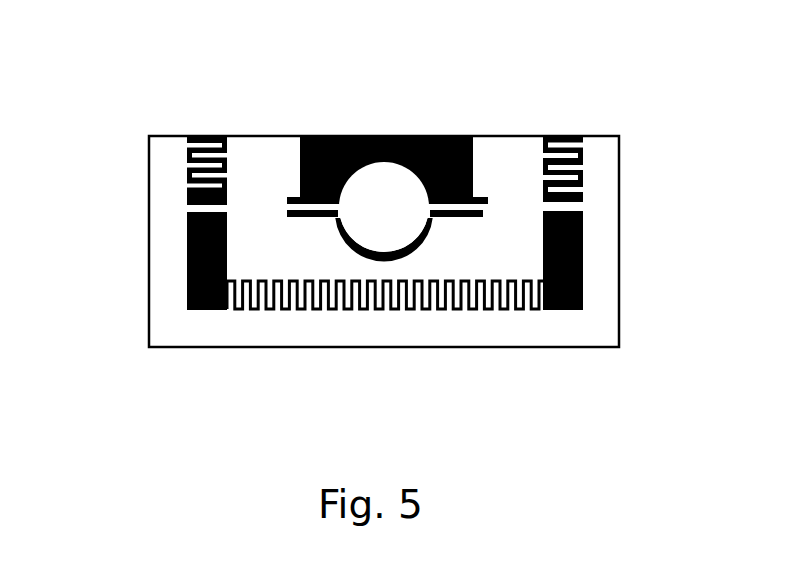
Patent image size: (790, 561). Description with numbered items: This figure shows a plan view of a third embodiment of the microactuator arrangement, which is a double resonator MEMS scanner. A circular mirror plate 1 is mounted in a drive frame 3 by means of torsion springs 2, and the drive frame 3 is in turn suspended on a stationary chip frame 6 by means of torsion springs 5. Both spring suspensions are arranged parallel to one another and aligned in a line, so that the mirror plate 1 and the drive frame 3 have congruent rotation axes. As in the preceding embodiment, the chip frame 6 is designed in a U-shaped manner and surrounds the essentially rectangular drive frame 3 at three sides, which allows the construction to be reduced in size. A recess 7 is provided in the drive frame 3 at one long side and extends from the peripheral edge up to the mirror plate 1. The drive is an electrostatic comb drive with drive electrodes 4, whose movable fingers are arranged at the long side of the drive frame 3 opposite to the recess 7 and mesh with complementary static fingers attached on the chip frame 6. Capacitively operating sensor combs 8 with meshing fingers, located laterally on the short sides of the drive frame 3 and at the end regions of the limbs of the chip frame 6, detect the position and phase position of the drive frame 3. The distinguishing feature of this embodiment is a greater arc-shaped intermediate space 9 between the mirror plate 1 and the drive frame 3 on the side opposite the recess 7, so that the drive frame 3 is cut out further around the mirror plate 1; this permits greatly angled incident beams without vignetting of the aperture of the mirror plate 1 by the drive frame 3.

The mirror plate 1 is at (362, 221).
The torsion springs 2 is at (488, 200).
The drive frame 3 is at (445, 266).
The drive electrodes 4 is at (292, 290).
The torsion springs 5 is at (583, 202).
The chip frame 6 is at (163, 178).
The recess 7 is at (447, 137).
The sensor combs 8 is at (582, 147).
The intermediate space 9 is at (377, 266).